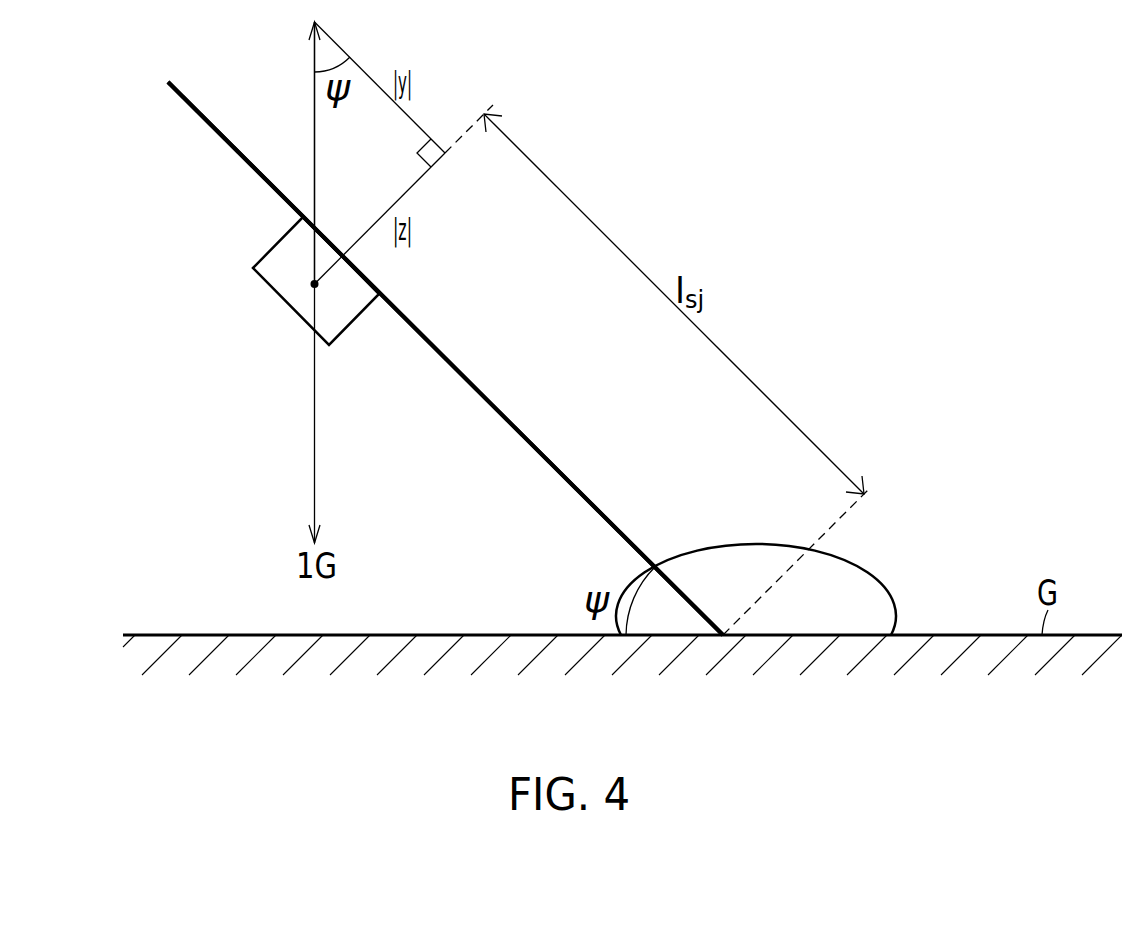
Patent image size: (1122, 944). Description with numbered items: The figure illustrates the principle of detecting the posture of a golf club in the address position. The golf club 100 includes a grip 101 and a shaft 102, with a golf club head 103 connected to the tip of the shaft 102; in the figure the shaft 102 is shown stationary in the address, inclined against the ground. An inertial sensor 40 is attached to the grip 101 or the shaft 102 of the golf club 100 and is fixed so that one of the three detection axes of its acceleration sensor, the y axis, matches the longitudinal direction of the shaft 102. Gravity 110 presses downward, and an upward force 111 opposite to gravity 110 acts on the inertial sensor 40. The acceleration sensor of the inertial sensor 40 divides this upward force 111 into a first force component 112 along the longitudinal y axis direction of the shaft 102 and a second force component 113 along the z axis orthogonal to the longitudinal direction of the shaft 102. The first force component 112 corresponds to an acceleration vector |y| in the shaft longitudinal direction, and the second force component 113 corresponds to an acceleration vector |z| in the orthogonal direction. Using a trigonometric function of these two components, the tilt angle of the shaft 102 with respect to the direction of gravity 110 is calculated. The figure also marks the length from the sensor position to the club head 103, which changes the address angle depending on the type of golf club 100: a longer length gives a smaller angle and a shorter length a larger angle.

The inertial sensor 40 is at (275, 247).
The golf club 100 is at (503, 441).
The grip 101 is at (200, 115).
The shaft 102 is at (497, 406).
The golf club head 103 is at (872, 570).
The gravity 110 is at (313, 434).
The upward force 111 is at (313, 132).
The first force component 112 is at (363, 70).
The second force component 113 is at (420, 180).